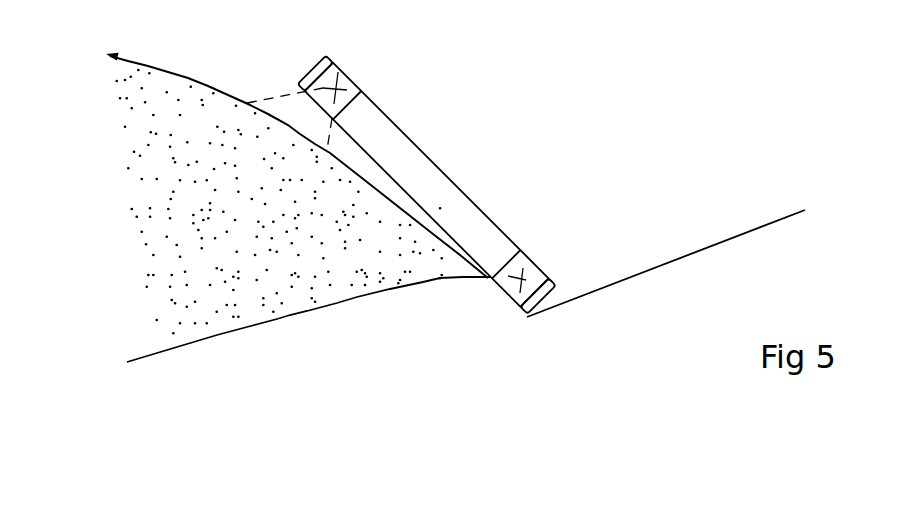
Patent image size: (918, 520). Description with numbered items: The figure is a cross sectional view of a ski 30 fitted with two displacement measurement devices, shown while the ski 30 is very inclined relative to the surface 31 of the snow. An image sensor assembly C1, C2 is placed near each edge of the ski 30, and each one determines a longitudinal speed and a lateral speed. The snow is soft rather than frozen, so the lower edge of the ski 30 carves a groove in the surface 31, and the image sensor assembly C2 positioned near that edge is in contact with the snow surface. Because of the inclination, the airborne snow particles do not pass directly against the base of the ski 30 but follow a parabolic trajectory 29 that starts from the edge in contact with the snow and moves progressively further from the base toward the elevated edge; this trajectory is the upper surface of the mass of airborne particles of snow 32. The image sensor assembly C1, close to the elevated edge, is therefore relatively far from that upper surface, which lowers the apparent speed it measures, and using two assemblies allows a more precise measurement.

The parabolic trajectory 29 is at (185, 78).
The ski 30 is at (430, 159).
The surface of the snow 31 is at (736, 236).
The mass of airborne particles of snow 32 is at (128, 232).
The image sensor assembly C1 is at (343, 67).
The image sensor assembly C2 is at (530, 262).